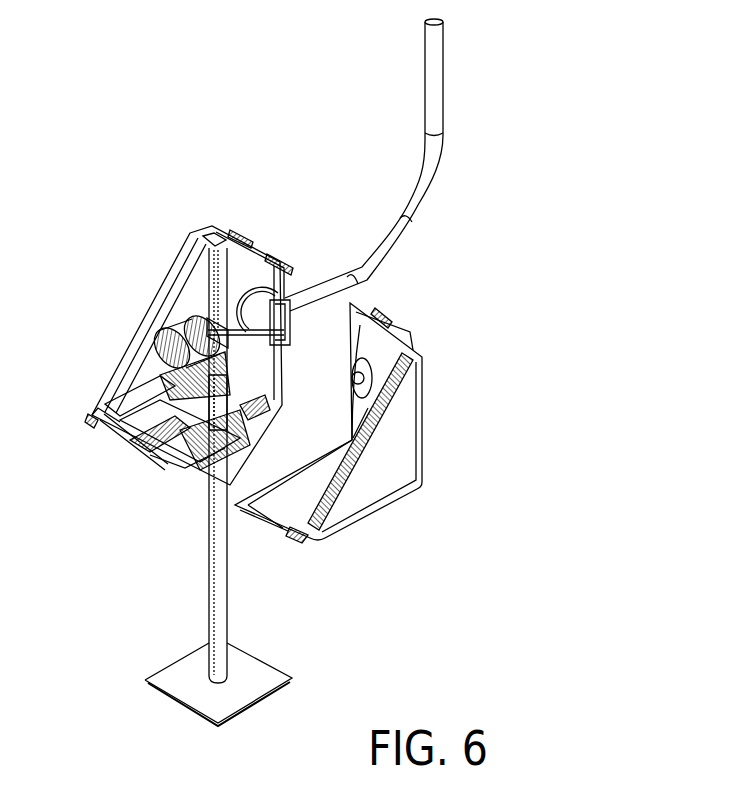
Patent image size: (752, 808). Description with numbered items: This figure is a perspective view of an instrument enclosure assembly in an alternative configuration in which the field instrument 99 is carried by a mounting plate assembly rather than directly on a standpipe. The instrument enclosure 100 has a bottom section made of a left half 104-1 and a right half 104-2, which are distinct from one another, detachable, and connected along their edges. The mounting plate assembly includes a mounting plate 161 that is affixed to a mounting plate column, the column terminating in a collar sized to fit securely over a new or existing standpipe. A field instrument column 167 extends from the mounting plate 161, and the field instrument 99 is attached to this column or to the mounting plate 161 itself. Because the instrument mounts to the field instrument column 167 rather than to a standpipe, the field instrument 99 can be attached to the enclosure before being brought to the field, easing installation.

The instrument enclosure 100 is at (137, 494).
The left half 104-1 is at (165, 283).
The right half 104-2 is at (392, 495).
The field instrument 99 is at (160, 342).
The mounting plate 161 is at (155, 426).
The field instrument column 167 is at (224, 394).